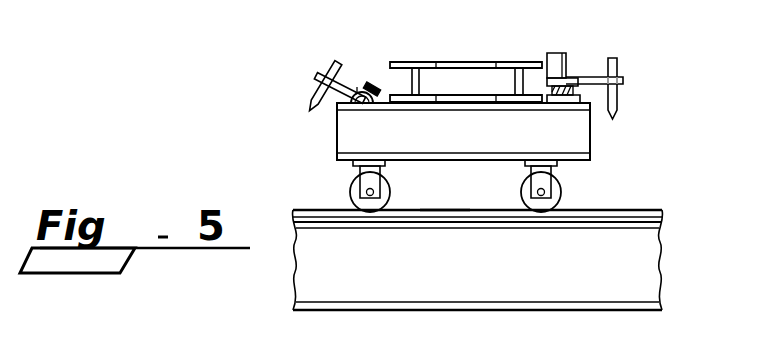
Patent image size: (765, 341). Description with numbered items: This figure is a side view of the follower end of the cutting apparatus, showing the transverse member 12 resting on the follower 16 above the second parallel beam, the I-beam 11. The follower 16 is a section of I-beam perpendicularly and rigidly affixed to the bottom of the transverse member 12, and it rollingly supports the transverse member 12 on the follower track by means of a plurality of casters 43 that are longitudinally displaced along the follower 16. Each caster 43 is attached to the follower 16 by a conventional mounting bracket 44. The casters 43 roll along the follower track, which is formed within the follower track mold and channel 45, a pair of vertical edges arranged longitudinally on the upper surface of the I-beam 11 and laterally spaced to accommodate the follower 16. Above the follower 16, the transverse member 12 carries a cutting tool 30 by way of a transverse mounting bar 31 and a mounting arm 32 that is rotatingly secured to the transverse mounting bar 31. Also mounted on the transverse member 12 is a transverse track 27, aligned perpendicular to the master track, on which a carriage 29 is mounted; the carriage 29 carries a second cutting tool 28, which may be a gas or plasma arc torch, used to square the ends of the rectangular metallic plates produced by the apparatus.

The I-beam 11 is at (483, 274).
The transverse member 12 is at (470, 75).
The follower 16 is at (577, 137).
The transverse track 27 is at (575, 86).
The cutting tool 28 is at (619, 66).
The carriage 29 is at (558, 53).
The cutting tool 30 is at (331, 64).
The transverse mounting bar 31 is at (361, 106).
The mounting arm 32 is at (346, 87).
The caster 43 is at (351, 192).
The mounting bracket 44 is at (361, 173).
The follower track mold and channel 45 is at (447, 209).